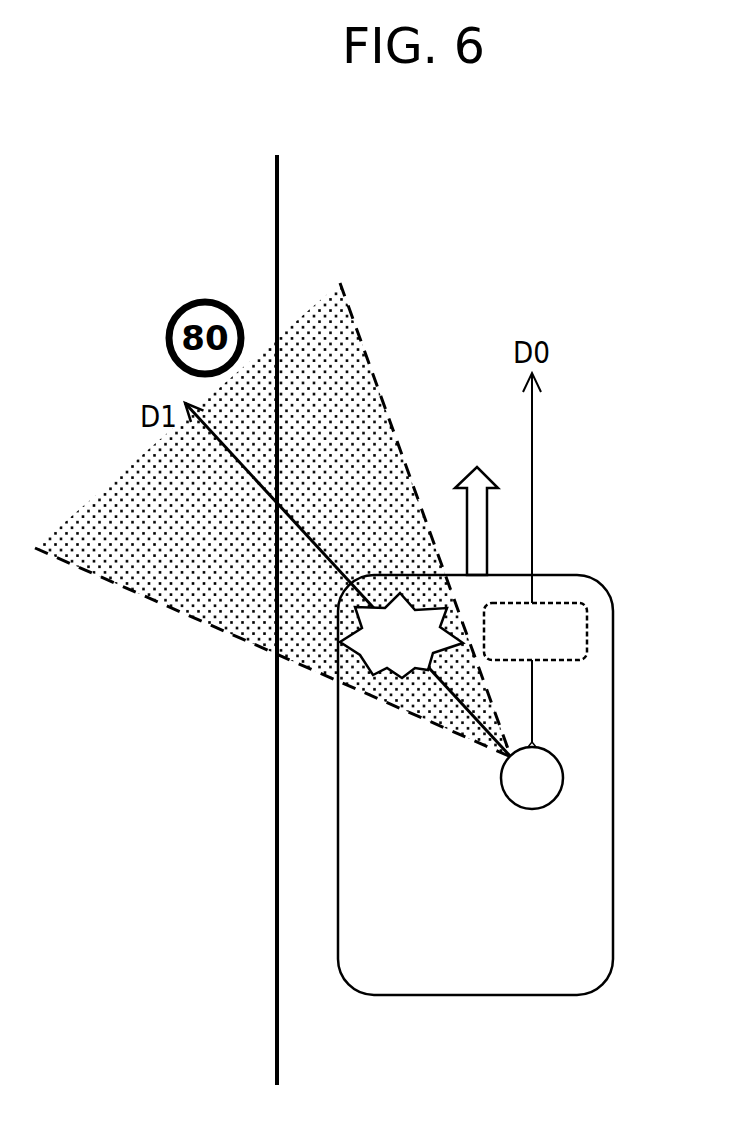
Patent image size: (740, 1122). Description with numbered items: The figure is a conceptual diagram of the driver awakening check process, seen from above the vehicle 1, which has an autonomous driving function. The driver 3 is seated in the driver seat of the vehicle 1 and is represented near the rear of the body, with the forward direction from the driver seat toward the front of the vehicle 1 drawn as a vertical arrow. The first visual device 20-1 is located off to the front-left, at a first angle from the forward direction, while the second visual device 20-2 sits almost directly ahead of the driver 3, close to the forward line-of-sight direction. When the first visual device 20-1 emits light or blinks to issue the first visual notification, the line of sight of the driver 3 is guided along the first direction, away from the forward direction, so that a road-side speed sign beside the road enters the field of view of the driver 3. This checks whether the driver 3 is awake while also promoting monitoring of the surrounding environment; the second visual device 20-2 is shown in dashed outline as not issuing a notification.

The vehicle 1 is at (613, 692).
The driver 3 is at (532, 809).
The first visual device 20-1 is at (401, 635).
The second visual device 20-2 is at (535, 631).